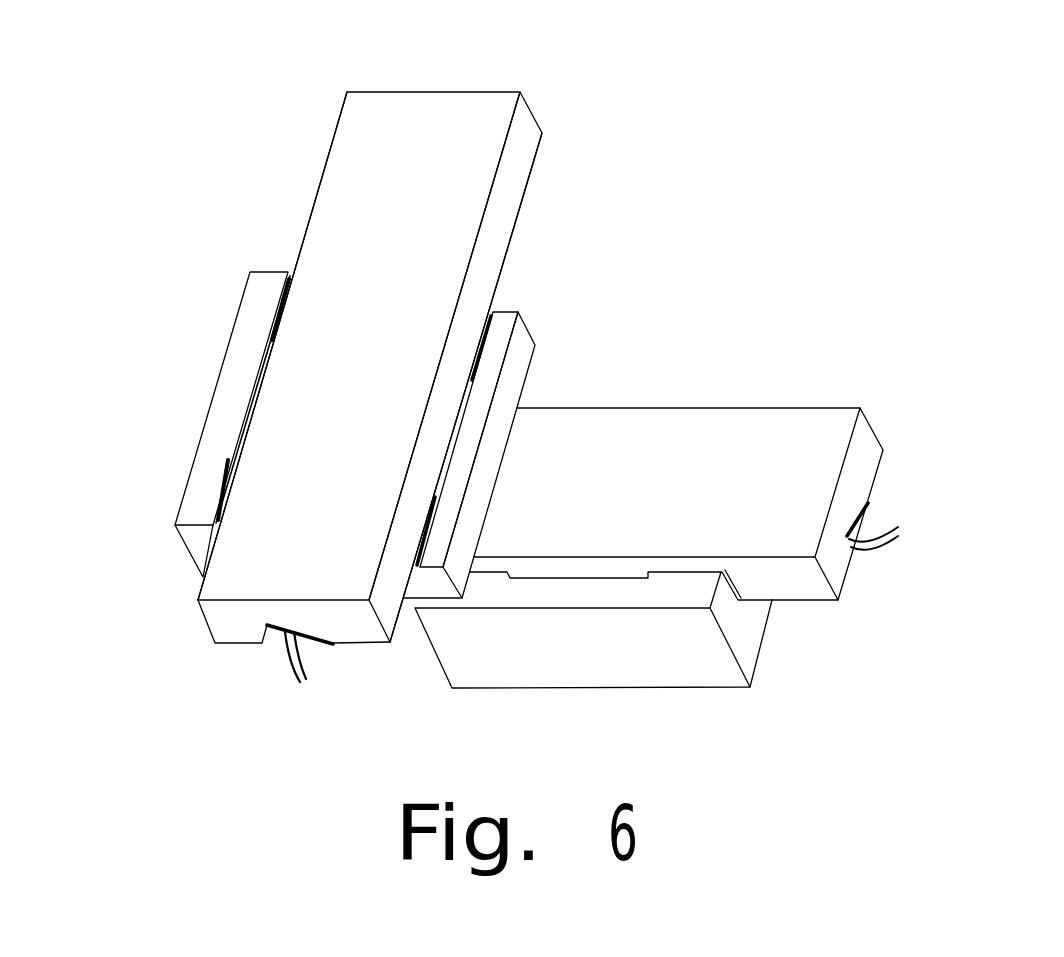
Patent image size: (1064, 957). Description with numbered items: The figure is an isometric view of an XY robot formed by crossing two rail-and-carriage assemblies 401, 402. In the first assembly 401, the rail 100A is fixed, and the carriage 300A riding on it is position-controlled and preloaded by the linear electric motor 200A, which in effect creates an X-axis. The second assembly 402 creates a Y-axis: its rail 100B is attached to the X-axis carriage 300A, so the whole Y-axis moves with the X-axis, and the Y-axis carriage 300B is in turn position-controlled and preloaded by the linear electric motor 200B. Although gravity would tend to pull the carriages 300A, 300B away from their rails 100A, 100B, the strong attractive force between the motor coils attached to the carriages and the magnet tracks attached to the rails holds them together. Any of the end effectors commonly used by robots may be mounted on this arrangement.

The rail 100A is at (463, 338).
The rail 100B is at (760, 479).
The linear electric motor 200A is at (362, 698).
The linear electric motor 200B is at (947, 515).
The carriage 300A is at (189, 410).
The carriage 300B is at (593, 671).
The assembly 401 is at (237, 313).
The assembly 402 is at (639, 387).